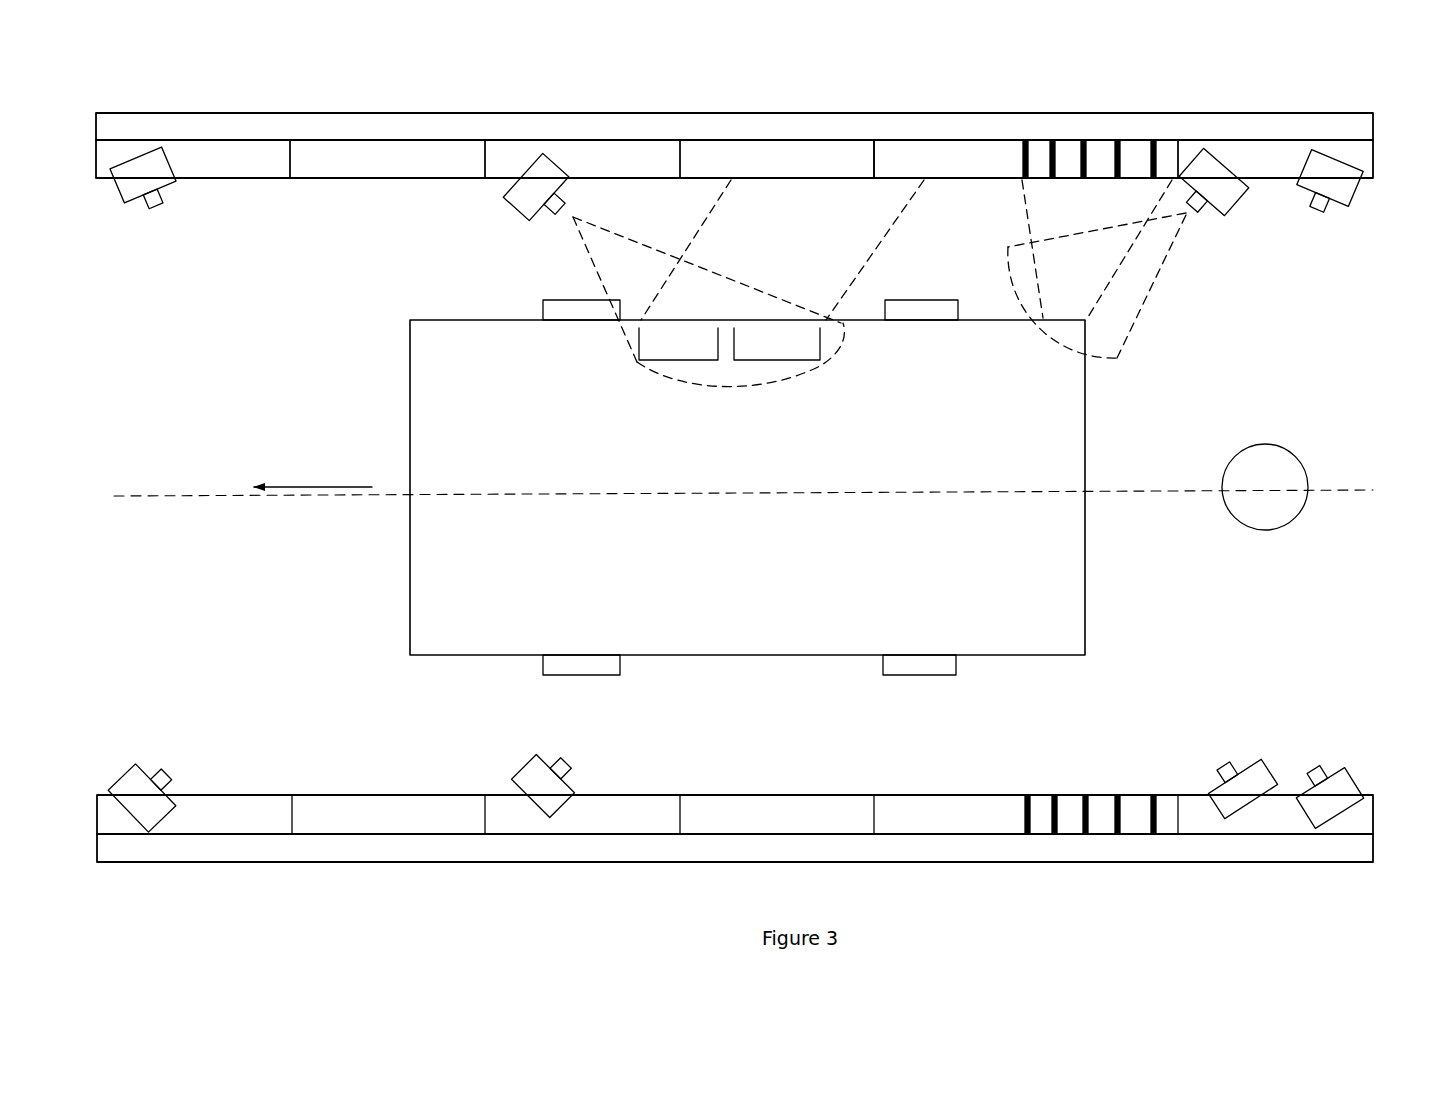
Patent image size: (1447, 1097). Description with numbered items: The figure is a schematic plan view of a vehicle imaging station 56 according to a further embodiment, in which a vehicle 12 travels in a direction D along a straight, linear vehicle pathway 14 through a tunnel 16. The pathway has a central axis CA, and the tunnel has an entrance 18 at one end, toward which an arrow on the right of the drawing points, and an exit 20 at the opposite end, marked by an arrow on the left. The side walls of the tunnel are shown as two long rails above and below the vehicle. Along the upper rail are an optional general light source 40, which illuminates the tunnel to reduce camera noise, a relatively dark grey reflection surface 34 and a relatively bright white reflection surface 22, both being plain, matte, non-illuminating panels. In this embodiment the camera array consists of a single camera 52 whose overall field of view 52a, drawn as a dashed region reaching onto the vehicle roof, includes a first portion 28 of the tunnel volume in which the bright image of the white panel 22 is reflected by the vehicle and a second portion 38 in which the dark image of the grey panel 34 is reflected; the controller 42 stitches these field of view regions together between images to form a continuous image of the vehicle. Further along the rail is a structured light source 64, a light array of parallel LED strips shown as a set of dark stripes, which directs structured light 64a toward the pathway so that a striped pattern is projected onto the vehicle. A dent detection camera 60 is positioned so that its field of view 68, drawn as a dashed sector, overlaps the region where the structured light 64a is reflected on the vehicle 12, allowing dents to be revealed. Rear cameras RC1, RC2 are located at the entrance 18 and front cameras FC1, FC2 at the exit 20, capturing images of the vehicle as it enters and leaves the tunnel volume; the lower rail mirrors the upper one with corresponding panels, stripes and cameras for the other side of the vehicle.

The vehicle 12 is at (750, 562).
The vehicle pathway 14 is at (1151, 401).
The tunnel 16 is at (1373, 845).
The entrance 18 is at (1323, 354).
The exit 20 is at (94, 393).
The relatively bright reflection surface 22 is at (923, 157).
The first portion of the tunnel volume 28 is at (777, 344).
The relatively dark reflection surface 34 is at (773, 163).
The second portion of the tunnel volume 38 is at (678, 344).
The general light source 40 is at (383, 157).
The controller 42 is at (1277, 496).
The single camera 52 is at (537, 180).
The overall field of view 52a is at (637, 260).
The first rail assembly 56 is at (1392, 86).
The dent detection camera 60 is at (1228, 167).
The structured light source 64 is at (1133, 157).
The structured light 64a is at (1042, 217).
The field of view of dent detecting camera 68 is at (1133, 278).
The front camera FC1 is at (178, 184).
The rear camera RC1 is at (1362, 188).
The front camera FC2 is at (120, 773).
The rear camera RC2 is at (1355, 786).
The direction of travel D is at (302, 470).
The central axis CA is at (761, 491).